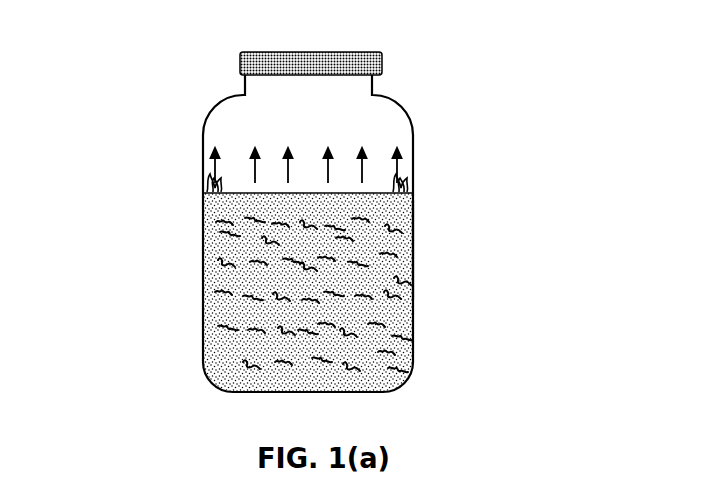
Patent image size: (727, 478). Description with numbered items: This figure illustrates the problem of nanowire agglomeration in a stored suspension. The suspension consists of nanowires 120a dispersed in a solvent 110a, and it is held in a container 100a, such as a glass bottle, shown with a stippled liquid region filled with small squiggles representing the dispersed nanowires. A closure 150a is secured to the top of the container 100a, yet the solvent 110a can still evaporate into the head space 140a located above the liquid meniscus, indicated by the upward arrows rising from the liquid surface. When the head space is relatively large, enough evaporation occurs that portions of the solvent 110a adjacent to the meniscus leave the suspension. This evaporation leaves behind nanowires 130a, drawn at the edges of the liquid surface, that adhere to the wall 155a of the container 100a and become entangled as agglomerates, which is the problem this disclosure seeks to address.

The container 100a is at (203, 243).
The solvent 110a is at (227, 373).
The nanowires 120a is at (360, 327).
The nanowires adhering to the wall 130a is at (413, 183).
The head space 140a is at (250, 113).
The closure 150a is at (381, 58).
The wall 155a is at (413, 241).